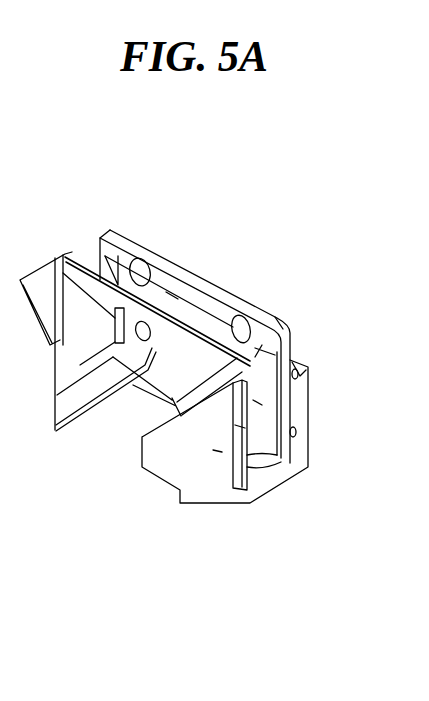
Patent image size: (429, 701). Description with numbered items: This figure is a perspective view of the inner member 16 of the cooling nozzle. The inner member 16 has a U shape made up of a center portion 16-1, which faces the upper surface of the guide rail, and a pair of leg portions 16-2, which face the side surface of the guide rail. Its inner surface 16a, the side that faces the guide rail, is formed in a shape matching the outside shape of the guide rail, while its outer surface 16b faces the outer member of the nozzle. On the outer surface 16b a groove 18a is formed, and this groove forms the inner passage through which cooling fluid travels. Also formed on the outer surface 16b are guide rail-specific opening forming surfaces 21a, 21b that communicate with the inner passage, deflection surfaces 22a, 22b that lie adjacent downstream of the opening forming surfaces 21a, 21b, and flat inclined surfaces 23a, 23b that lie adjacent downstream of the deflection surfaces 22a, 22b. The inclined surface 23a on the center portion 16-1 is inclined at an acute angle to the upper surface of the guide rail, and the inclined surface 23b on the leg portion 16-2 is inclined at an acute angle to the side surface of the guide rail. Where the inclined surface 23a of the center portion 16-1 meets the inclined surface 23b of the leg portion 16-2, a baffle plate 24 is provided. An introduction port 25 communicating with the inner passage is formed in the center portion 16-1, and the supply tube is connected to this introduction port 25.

The inner member 16 is at (219, 327).
The center portion 16-1 is at (215, 326).
The leg portion 16-2 is at (265, 410).
The inner surface 16a is at (75, 375).
The outer surface 16b is at (117, 287).
The groove 18a is at (172, 297).
The guide rail-specific opening forming surface 21a is at (190, 357).
The deflection surface 22a is at (180, 327).
The inclined surface 23a is at (233, 360).
The guide rail-specific opening forming surface 21b is at (253, 402).
The deflection surface 22b is at (235, 425).
The inclined surface 23b is at (213, 450).
The baffle plate 24 is at (38, 273).
The introduction port 25 is at (145, 343).